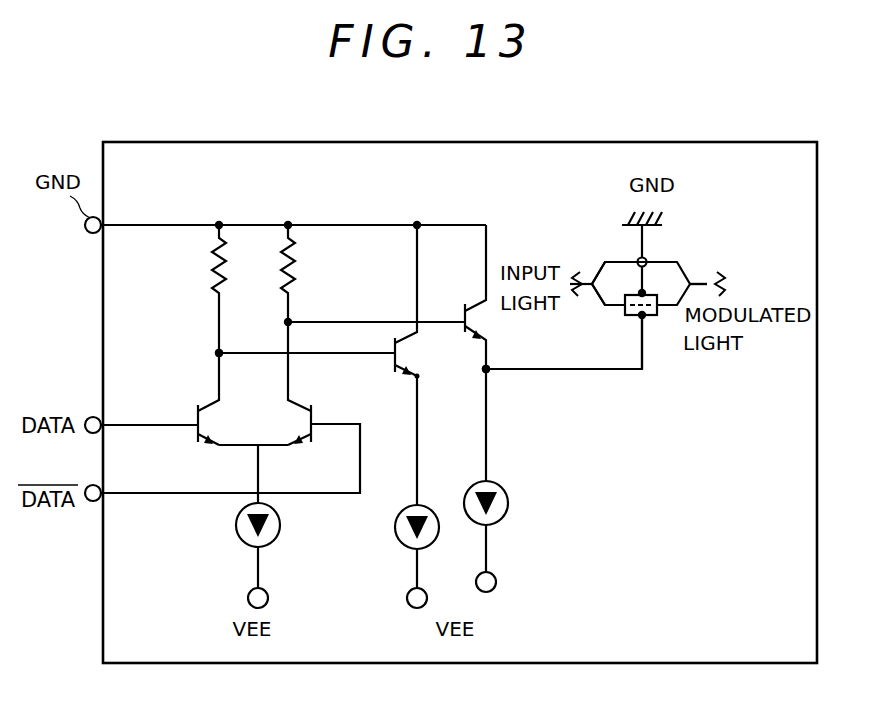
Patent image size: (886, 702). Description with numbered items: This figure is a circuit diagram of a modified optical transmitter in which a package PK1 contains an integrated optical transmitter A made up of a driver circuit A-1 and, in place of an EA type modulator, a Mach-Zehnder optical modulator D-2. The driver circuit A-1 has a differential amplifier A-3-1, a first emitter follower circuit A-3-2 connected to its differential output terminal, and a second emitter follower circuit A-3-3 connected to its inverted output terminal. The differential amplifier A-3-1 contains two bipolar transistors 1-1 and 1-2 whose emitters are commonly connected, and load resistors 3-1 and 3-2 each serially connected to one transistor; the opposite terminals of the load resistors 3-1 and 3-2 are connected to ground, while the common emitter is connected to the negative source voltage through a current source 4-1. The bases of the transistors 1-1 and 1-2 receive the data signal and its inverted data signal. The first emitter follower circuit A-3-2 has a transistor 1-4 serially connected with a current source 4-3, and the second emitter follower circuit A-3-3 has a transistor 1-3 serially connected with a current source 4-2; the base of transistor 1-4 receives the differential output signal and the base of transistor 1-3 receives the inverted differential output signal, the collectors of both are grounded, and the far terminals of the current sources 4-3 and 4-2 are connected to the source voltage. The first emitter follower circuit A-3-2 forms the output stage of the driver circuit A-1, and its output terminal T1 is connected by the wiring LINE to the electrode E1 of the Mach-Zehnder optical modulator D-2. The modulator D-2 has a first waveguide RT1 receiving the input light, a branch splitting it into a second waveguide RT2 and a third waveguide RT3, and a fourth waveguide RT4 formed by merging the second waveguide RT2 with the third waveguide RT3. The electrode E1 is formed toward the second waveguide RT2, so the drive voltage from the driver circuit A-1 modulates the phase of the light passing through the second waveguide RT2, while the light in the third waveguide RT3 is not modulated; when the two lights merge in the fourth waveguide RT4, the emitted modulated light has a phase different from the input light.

The package PK1 is at (410, 142).
The driver circuit A-1 is at (255, 218).
The integrated optical transmitter A is at (453, 218).
The load resistor 3-1 is at (211, 268).
The load resistor 3-2 is at (299, 268).
The differential amplifier A-3-1 is at (208, 372).
The bipolar transistor 1-1 is at (196, 421).
The bipolar transistor 1-2 is at (315, 417).
The transistor 1-3 is at (393, 346).
The transistor 1-4 is at (463, 310).
The output terminal T1 is at (490, 365).
The second emitter follower circuit A-3-3 is at (428, 380).
The first emitter follower circuit A-3-2 is at (495, 378).
The current source 4-1 is at (232, 526).
The current source 4-2 is at (395, 527).
The current source 4-3 is at (508, 502).
The Mach-Zehnder optical modulator D-2 is at (700, 270).
The first waveguide RT1 is at (583, 281).
The second waveguide RT2 is at (617, 307).
The third waveguide RT3 is at (598, 268).
The fourth waveguide RT4 is at (707, 282).
The electrode E1 is at (643, 317).
The wiring LINE is at (612, 370).